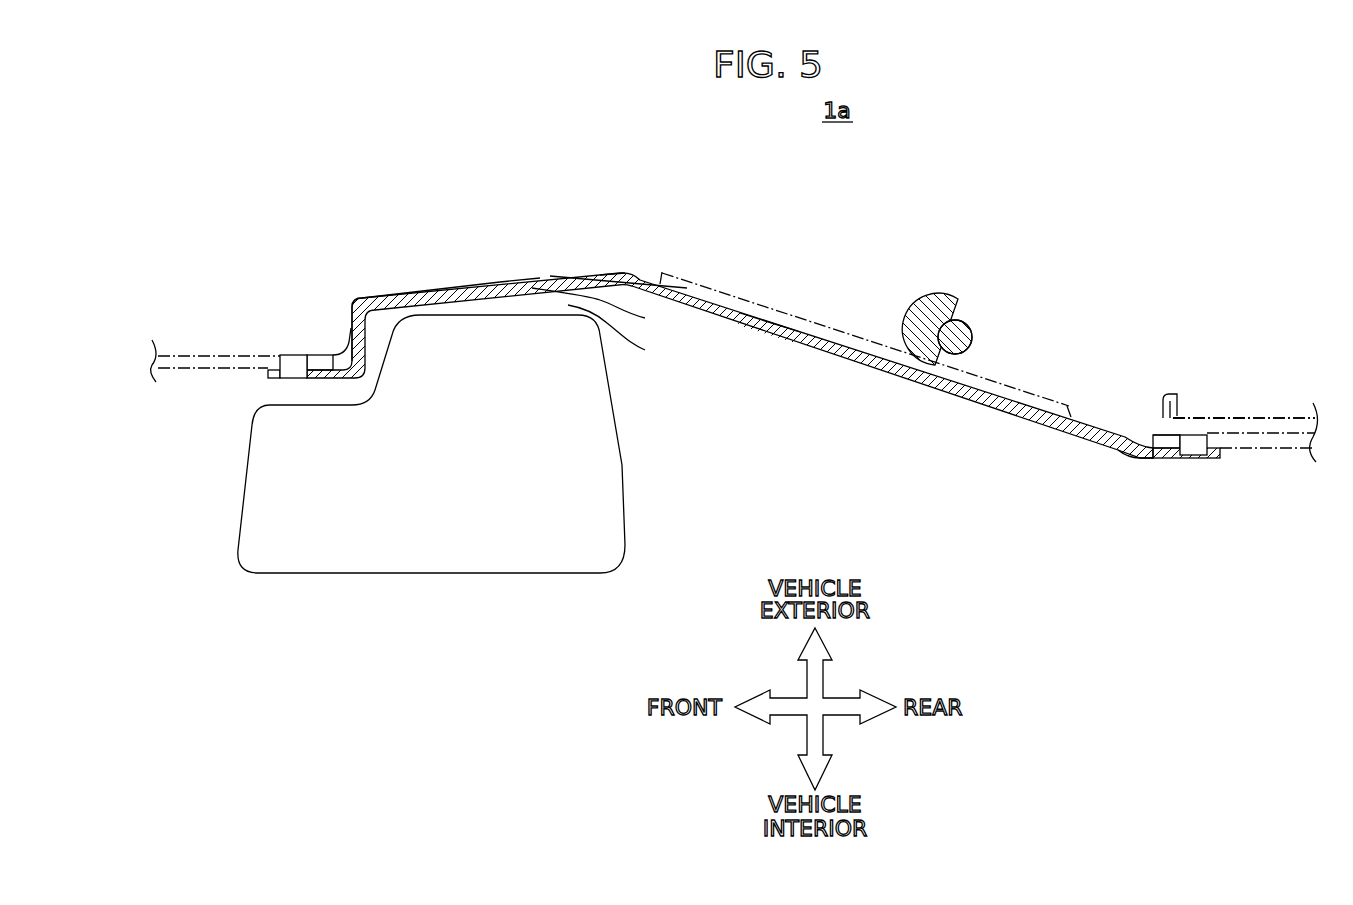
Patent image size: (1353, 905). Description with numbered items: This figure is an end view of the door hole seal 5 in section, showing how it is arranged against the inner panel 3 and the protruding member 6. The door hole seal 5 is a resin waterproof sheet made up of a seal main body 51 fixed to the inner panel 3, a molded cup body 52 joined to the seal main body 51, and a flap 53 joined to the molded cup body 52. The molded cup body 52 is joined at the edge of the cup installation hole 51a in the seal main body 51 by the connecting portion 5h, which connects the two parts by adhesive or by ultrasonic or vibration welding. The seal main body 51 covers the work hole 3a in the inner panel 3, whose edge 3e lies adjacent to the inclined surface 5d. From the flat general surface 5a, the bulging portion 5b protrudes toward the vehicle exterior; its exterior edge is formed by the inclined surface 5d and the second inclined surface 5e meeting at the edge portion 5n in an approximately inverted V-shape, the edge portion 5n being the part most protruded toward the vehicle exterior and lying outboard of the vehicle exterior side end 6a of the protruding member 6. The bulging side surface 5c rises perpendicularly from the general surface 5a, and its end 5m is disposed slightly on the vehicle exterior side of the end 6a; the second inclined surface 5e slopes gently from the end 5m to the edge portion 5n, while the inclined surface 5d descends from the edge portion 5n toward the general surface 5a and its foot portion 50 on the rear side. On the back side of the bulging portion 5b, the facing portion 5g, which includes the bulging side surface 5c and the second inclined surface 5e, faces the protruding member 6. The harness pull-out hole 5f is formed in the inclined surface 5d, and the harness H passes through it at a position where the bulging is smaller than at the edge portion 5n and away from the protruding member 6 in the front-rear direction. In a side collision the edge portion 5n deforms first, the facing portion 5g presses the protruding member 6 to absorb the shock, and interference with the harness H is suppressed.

The inner panel 3 is at (1295, 405).
The work hole 3a is at (1170, 412).
The edge of the work hole 3e is at (1176, 400).
The door hole seal 5 is at (877, 200).
The general surface 5a is at (200, 355).
The bulging portion 5b is at (687, 287).
The bulging side surface 5c is at (357, 299).
The inclined surface 5d is at (770, 322).
The second inclined surface 5e is at (457, 283).
The harness pull-out hole 5f is at (762, 333).
The facing portion 5g is at (604, 310).
The connecting portion 5h is at (290, 379).
The end of the bulging side surface 5m is at (360, 303).
The edge portion 5n is at (612, 277).
The protruding member 6 is at (442, 547).
The vehicle exterior side end 6a is at (622, 335).
The foot portion 50 is at (1148, 462).
The seal main body 51 is at (228, 353).
The cup installation hole 51a is at (350, 328).
The molded cup body 52 is at (512, 276).
The flap 53 is at (997, 387).
The harness H is at (970, 322).